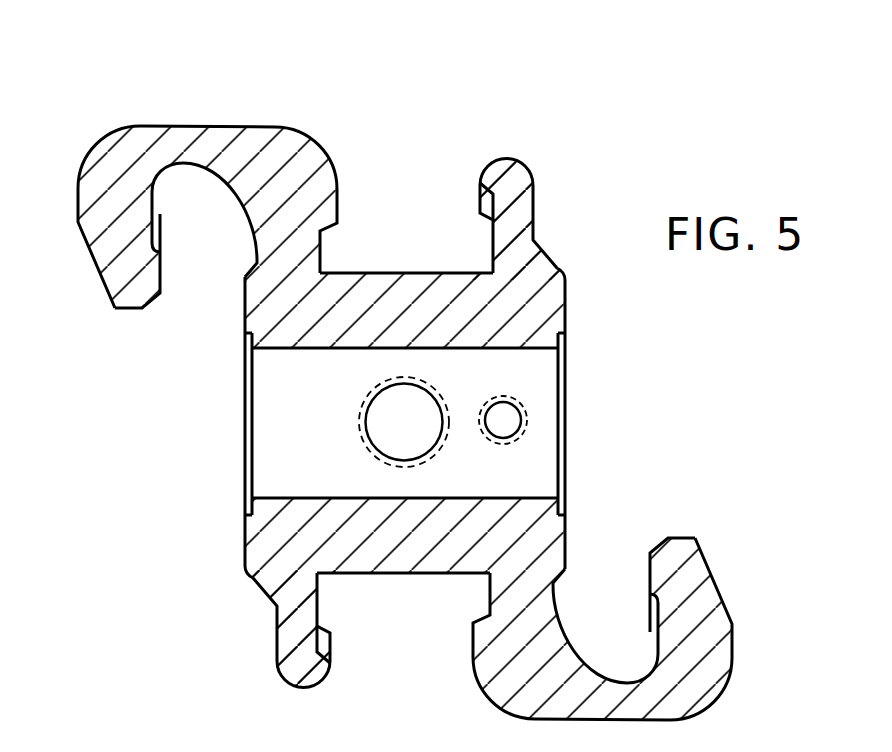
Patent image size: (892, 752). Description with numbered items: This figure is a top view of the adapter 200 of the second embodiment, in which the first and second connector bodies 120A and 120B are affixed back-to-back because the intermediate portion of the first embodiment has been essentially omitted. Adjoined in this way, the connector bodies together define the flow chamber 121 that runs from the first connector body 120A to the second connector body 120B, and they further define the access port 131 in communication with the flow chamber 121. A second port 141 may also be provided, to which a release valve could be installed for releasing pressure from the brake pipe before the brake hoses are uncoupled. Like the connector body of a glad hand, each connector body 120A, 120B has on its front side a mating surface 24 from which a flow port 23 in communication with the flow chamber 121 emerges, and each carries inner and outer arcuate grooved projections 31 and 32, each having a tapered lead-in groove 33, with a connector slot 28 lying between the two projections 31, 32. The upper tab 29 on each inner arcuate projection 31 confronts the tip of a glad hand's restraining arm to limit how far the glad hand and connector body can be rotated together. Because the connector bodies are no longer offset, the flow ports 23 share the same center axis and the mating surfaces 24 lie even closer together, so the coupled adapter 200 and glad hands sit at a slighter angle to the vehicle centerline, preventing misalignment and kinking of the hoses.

The adapter 200 is at (394, 126).
The flow port 23 is at (222, 437).
The mating surface 24 is at (565, 303).
The connector slot 28 is at (199, 350).
The upper tab 29 is at (133, 303).
The inner arcuate grooved projection 31 is at (105, 252).
The outer arcuate grooved projection 32 is at (502, 157).
The tapered lead-in groove 33 is at (488, 202).
The first connector body 120A is at (210, 642).
The second connector body 120B is at (592, 202).
The flow chamber 121 is at (547, 465).
The access port 131 is at (378, 437).
The second port 141 is at (512, 417).